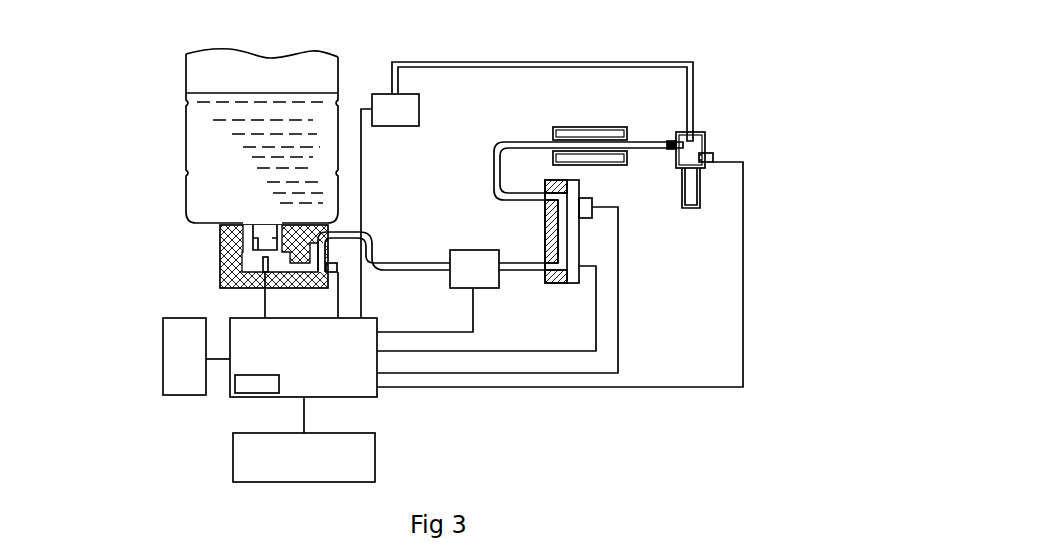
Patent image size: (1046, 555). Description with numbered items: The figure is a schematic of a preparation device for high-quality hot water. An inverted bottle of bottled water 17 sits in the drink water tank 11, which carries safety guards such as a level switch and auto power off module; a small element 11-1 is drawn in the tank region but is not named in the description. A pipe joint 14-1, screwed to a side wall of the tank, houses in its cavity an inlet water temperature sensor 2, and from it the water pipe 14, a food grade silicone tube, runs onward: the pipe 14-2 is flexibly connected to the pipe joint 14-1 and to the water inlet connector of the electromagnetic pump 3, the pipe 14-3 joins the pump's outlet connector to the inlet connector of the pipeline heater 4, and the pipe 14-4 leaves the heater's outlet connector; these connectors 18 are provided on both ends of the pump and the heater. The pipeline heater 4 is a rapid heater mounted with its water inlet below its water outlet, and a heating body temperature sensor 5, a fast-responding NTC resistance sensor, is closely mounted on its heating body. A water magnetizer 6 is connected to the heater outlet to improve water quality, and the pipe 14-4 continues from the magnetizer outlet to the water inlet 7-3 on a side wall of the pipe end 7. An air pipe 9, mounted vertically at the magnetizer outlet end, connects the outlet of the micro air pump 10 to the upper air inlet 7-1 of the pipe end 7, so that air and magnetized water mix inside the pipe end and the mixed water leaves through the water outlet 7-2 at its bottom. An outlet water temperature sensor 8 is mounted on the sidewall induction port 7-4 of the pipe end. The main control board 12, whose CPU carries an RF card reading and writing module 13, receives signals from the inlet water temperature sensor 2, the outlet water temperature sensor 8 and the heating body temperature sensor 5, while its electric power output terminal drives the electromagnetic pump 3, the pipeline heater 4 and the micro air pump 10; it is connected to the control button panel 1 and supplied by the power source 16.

The control button panel 1 is at (360, 461).
The inlet water temperature sensor 2 is at (331, 270).
The electromagnetic pump 3 is at (478, 280).
The pipeline heater 4 is at (572, 247).
The heating body temperature sensor 5 is at (584, 207).
The water magnetizer 6 is at (588, 157).
The pipe end 7 is at (683, 130).
The upper air inlet 7-1 is at (697, 132).
The water outlet 7-2 is at (691, 168).
The water inlet 7-3 is at (682, 143).
The sidewall induction port 7-4 is at (706, 160).
The outlet water temperature sensor 8 is at (713, 157).
The air pipe 9 is at (517, 64).
The micro air pump 10 is at (400, 103).
The drink water tank 11 is at (235, 242).
The water level detector 11-1 is at (263, 263).
The main control board 12 is at (250, 330).
The RF card reading and writing module 13 is at (183, 368).
The water pipe 14 is at (424, 269).
The pipe joint 14-1 is at (325, 240).
The pipe 14-2 is at (389, 269).
The pipe 14-3 is at (514, 269).
The pipe 14-4 is at (525, 146).
The power source 16 is at (255, 385).
The bottled water 17 is at (232, 170).
The connectors 18 is at (542, 272).